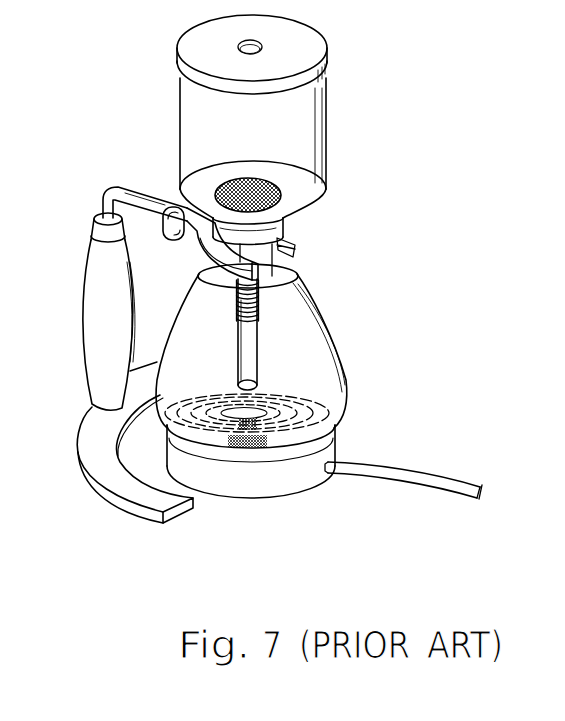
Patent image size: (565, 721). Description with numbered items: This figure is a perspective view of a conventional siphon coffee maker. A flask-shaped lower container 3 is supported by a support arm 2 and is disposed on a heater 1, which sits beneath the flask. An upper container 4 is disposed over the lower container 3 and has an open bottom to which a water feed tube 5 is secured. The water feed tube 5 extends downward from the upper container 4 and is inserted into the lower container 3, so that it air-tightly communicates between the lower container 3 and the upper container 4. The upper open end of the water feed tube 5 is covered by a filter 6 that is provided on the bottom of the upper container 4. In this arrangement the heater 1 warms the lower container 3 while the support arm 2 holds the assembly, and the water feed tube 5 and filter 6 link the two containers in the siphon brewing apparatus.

The heater 1 is at (250, 477).
The support arm 2 is at (80, 308).
The lower container 3 is at (342, 350).
The upper container 4 is at (323, 150).
The water feed tube 5 is at (263, 350).
The filter 6 is at (243, 178).